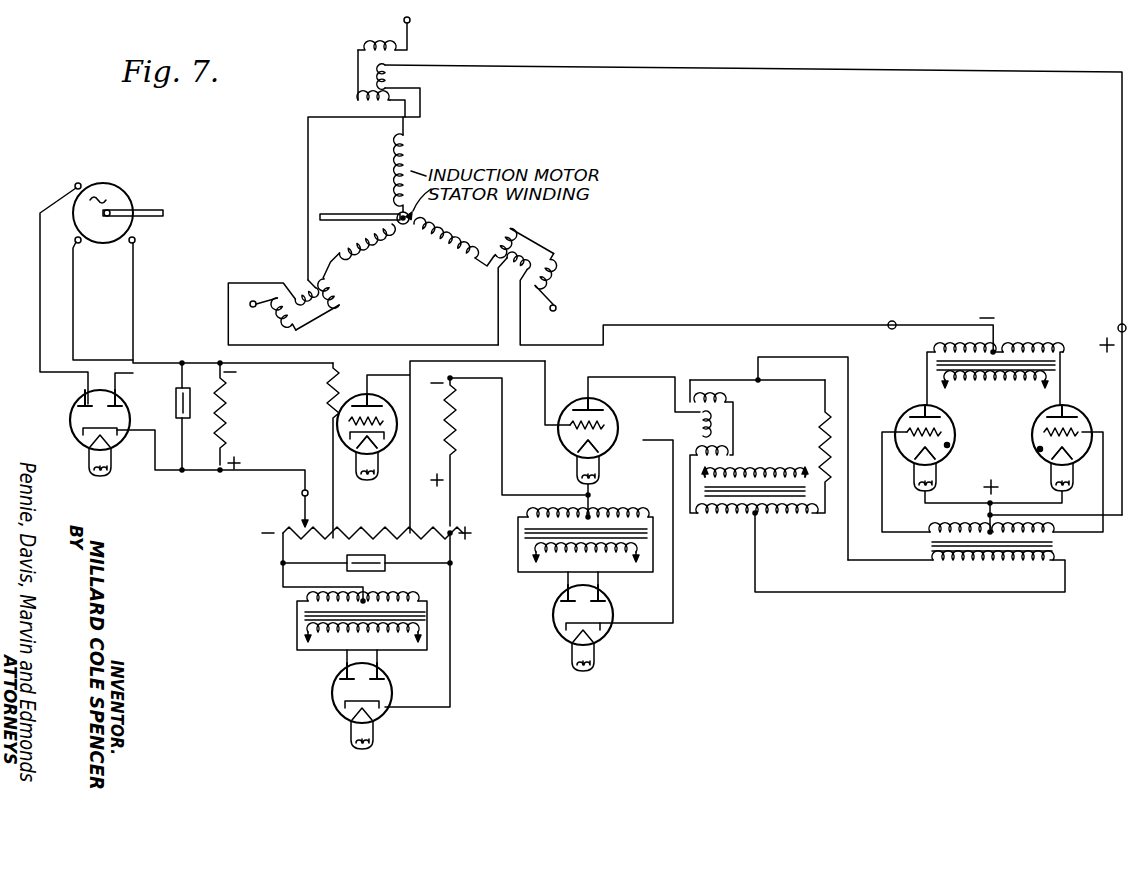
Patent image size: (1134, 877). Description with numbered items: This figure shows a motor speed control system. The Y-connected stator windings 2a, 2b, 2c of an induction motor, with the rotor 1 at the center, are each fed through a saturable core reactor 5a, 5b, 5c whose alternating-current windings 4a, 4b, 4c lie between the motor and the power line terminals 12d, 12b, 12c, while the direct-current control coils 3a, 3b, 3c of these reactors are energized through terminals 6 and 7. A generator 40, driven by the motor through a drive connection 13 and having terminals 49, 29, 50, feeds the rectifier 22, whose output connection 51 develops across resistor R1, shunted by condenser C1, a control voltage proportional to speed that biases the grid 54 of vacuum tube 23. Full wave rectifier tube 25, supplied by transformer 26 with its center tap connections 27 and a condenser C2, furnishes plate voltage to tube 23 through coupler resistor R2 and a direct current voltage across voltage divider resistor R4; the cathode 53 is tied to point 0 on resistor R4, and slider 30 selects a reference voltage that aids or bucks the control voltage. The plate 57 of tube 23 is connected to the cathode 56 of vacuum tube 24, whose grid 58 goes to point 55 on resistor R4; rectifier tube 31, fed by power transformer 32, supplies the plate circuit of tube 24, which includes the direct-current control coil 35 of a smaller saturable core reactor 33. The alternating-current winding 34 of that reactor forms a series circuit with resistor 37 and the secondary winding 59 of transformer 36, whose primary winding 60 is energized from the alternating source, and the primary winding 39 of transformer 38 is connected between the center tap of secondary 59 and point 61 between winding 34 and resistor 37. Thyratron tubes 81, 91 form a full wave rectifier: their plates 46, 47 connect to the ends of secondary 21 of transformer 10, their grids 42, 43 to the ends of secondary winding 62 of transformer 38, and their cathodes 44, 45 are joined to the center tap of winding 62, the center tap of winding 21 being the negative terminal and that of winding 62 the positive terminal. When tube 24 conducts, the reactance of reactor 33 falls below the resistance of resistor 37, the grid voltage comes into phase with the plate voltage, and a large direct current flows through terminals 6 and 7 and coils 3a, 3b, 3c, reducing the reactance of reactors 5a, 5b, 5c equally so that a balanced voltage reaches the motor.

The rotor 1 is at (399, 212).
The shaft 13 is at (350, 213).
The stator winding 2a is at (410, 151).
The stator winding 2b is at (361, 250).
The stator winding 2c is at (448, 304).
The direct current control coil 3a is at (400, 76).
The direct current control coil 3b is at (305, 283).
The direct current control coil 3c is at (505, 268).
The alternating-current winding 4a is at (365, 50).
The alternating-current winding 4b is at (336, 292).
The alternating-current winding 4c is at (500, 248).
The saturable core reactor 5a is at (350, 75).
The saturable core reactor 5b is at (326, 331).
The saturable core reactor 5c is at (533, 240).
The power line terminal 12b is at (250, 304).
The power line terminal 12c is at (556, 321).
The power line terminal 12d is at (404, 21).
The generator 40 is at (108, 186).
The generator terminal 49 is at (76, 184).
The generator terminal 29 is at (103, 298).
The generator terminal 50 is at (136, 240).
The rectifier 22 is at (70, 428).
The rectifier cathode lead 51 is at (108, 445).
The condenser C1 is at (168, 416).
The resistor R1 is at (236, 416).
The slider 30 is at (300, 497).
The vacuum tube 23 is at (400, 397).
The plate 57 is at (359, 404).
The grid 54 is at (345, 422).
The cathode 53 is at (375, 454).
The coupler resistor R2 is at (508, 457).
The voltage divider resistor R4 is at (388, 528).
The point on resistor R4 0 is at (333, 527).
The point on resistor R4 55 is at (412, 528).
The capacitor C2 is at (382, 571).
The transformer center tap leads 27 is at (332, 594).
The transformer 26 is at (428, 618).
The full wave rectifier tube 25 is at (330, 694).
The vacuum tube 24 is at (610, 405).
The grid 58 is at (556, 432).
The cathode 56 is at (598, 453).
The power transformer 32 is at (647, 536).
The full wave rectifier tube 31 is at (610, 607).
The direct-current control coil 35 is at (697, 432).
The alternating-current winding 34 is at (715, 404).
The saturable core reactor 33 is at (736, 426).
The point in series circuit 61 is at (758, 379).
The resistor 37 is at (821, 418).
The transformer 36 is at (818, 495).
The primary winding 60 is at (774, 480).
The secondary winding 59 is at (765, 518).
The terminal 6 is at (893, 321).
The terminal 7 is at (1118, 326).
The secondary winding 21 is at (935, 351).
The transformer 10 is at (1057, 362).
The plate 46 is at (918, 415).
The grid 42 is at (946, 433).
The Thyratron tube 81 is at (950, 449).
The cathode 44 is at (938, 482).
The plate 47 is at (1069, 414).
The grid 43 is at (1043, 433).
The Thyratron tube 91 is at (1038, 454).
The cathode 45 is at (1078, 470).
The secondary winding 62 is at (935, 530).
The transformer 38 is at (1055, 546).
The primary winding 39 is at (941, 564).